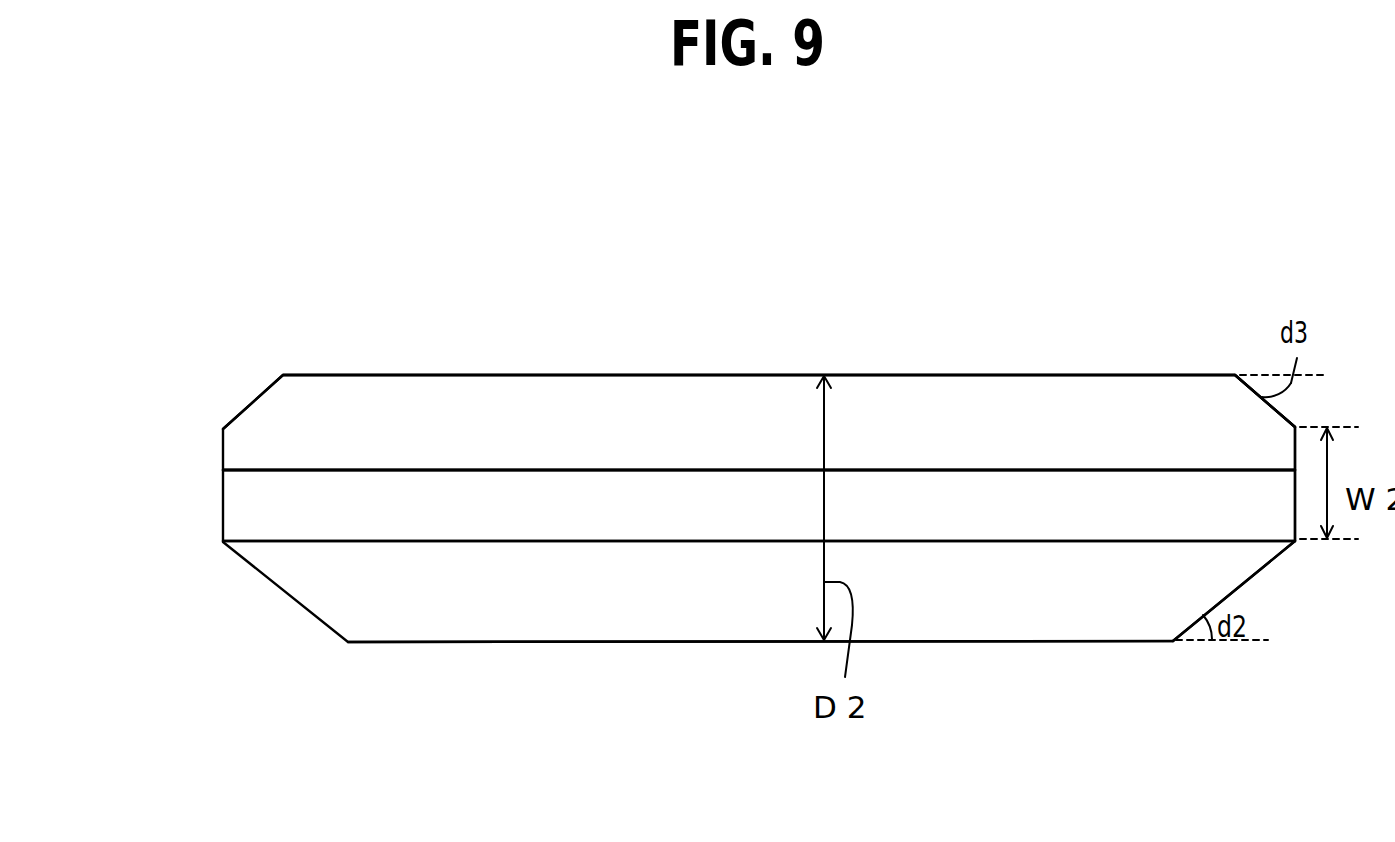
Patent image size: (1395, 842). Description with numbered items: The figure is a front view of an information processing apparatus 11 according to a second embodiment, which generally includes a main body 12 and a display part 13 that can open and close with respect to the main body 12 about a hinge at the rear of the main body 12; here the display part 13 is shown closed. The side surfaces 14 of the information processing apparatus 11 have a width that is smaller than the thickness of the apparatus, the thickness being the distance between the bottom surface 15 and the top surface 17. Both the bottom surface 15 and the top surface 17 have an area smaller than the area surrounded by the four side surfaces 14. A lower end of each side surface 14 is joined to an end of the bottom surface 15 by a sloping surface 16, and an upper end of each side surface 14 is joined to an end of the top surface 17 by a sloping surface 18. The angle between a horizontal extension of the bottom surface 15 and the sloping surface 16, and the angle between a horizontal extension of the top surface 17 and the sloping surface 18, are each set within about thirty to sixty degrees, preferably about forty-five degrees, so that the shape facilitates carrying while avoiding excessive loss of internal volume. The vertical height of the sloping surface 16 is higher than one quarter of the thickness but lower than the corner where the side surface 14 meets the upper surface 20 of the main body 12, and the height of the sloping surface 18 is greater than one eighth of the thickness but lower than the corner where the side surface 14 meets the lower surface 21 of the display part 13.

The information processing apparatus 11 is at (1172, 146).
The main body 12 is at (253, 498).
The display part 13 is at (253, 417).
The side surface 14 is at (1299, 509).
The bottom surface 15 is at (965, 642).
The sloping surface 16 is at (1247, 580).
The top surface 17 is at (761, 375).
The sloping surface 18 is at (1277, 408).
The upper surface 20 is at (719, 469).
The lower surface 21 is at (502, 469).